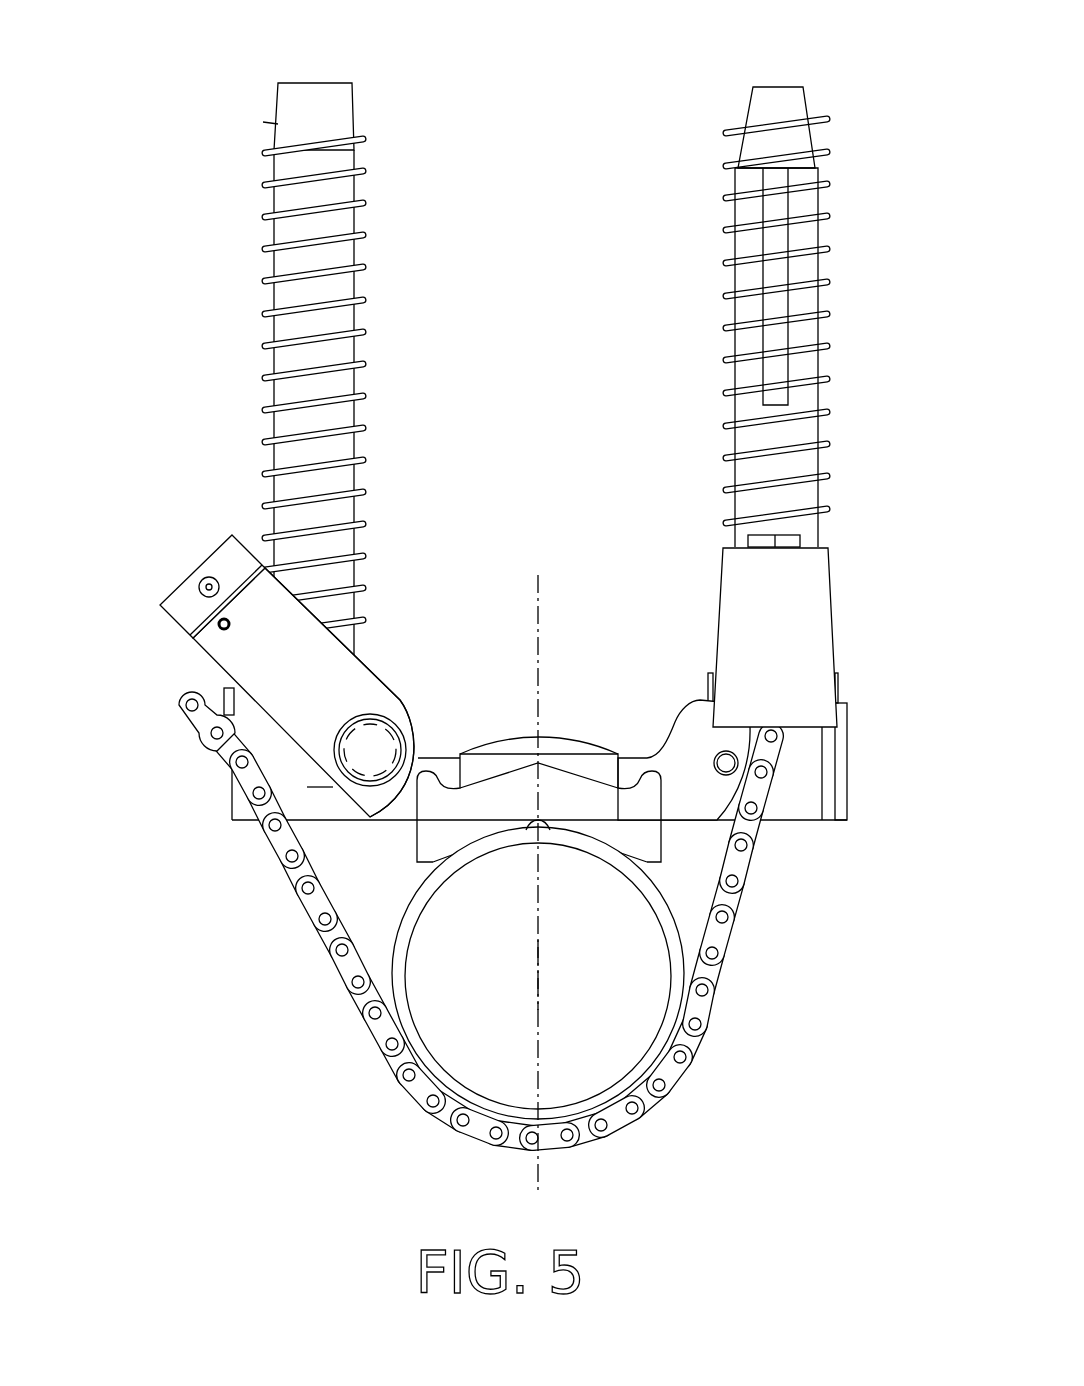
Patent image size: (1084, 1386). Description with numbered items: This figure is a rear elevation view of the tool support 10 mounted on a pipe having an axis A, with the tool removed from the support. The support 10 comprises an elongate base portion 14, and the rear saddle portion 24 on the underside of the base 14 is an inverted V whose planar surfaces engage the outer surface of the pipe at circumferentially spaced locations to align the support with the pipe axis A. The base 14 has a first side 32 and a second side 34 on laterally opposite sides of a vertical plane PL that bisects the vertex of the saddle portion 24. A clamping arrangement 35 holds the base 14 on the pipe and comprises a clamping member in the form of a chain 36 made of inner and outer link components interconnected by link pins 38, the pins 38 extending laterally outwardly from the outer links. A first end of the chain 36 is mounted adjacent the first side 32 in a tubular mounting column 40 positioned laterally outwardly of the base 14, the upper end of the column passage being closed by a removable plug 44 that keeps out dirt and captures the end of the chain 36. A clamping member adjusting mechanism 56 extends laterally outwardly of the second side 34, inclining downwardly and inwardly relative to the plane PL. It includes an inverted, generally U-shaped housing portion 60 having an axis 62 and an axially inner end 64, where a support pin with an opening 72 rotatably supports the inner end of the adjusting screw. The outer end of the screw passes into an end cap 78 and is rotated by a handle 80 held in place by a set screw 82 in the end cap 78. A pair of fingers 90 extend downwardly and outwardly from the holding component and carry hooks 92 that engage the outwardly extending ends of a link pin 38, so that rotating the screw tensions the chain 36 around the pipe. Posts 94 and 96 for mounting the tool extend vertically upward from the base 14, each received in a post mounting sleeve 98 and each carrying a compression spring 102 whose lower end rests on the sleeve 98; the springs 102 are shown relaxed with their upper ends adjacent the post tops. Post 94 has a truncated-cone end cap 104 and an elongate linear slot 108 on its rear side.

The tool support 10 is at (518, 602).
The base portion 14 is at (567, 730).
The saddle portion 24 is at (410, 868).
The first side 32 is at (672, 853).
The second side 34 is at (466, 752).
The clamping arrangement 35 is at (425, 933).
The chain 36 is at (360, 1048).
The link pins 38 is at (203, 736).
The mounting column 40 is at (855, 605).
The removable plug 44 is at (810, 545).
The clamping member adjusting mechanism 56 is at (410, 628).
The housing portion 60 is at (327, 652).
The axis 62 is at (284, 642).
The inner end 64 is at (403, 693).
The opening 72 is at (388, 742).
The end cap 78 is at (160, 605).
The handle 80 is at (197, 580).
The set screw 82 is at (215, 622).
The fingers 90 is at (160, 739).
The hooks 92 is at (213, 750).
The post 94 is at (849, 278).
The post 96 is at (545, 358).
The post mounting sleeve 98 is at (707, 690).
The compression spring 102 is at (370, 265).
The end cap 104 is at (810, 86).
The linear slot 108 is at (782, 302).
The pipe axis A is at (540, 985).
The vertical plane PL is at (545, 600).